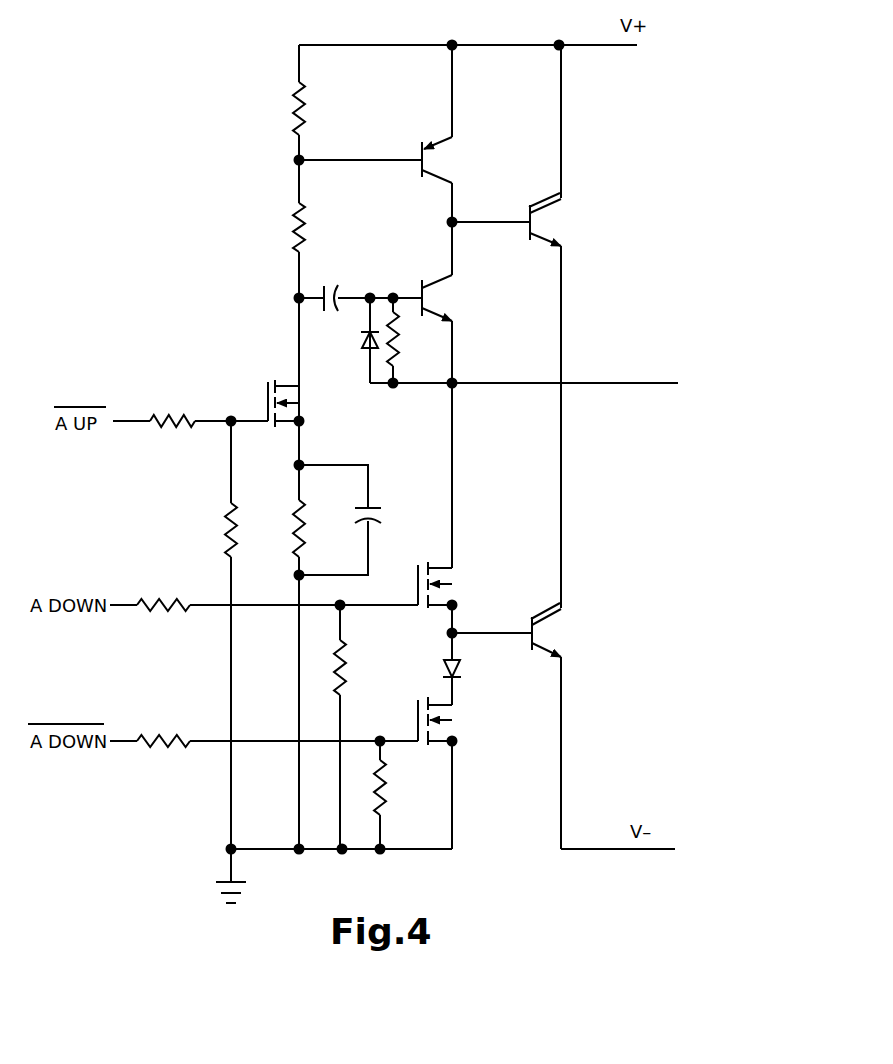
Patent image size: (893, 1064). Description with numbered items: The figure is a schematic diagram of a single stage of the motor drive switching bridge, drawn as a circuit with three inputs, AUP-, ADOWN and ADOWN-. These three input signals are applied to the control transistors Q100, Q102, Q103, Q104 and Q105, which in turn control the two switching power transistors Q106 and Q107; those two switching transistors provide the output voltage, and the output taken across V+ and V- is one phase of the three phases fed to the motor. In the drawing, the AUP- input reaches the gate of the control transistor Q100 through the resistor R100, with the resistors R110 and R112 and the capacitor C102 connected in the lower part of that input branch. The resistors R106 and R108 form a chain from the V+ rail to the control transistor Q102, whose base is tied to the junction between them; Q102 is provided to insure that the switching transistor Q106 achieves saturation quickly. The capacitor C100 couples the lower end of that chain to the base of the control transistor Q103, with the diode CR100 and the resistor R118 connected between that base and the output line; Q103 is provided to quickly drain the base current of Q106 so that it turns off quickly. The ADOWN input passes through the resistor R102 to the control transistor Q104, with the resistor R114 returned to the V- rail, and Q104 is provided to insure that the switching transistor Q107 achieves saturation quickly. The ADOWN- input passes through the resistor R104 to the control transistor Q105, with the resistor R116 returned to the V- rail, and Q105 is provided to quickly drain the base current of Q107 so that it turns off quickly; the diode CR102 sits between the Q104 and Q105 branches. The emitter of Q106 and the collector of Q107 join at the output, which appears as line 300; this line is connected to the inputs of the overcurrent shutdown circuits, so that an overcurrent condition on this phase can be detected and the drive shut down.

The resistor R106 is at (271, 108).
The resistor R108 is at (271, 227).
The control transistor Q102 is at (464, 160).
The switching power transistor Q106 is at (572, 219).
The capacitor C100 is at (360, 286).
The control transistor Q103 is at (464, 298).
The diode CR100 is at (342, 340).
The resistor R118 is at (418, 343).
The line 300 is at (600, 384).
The control transistor Q100 is at (250, 403).
The resistor R100 is at (171, 431).
The resistor R110 is at (204, 635).
The resistor R112 is at (274, 528).
The capacitor C102 is at (369, 520).
The control transistor Q104 is at (465, 585).
The resistor R102 is at (163, 616).
The resistor R114 is at (366, 727).
The switching power transistor Q107 is at (577, 630).
The diode CR102 is at (486, 672).
The control transistor Q105 is at (464, 721).
The resistor R104 is at (163, 752).
The resistor R116 is at (407, 795).